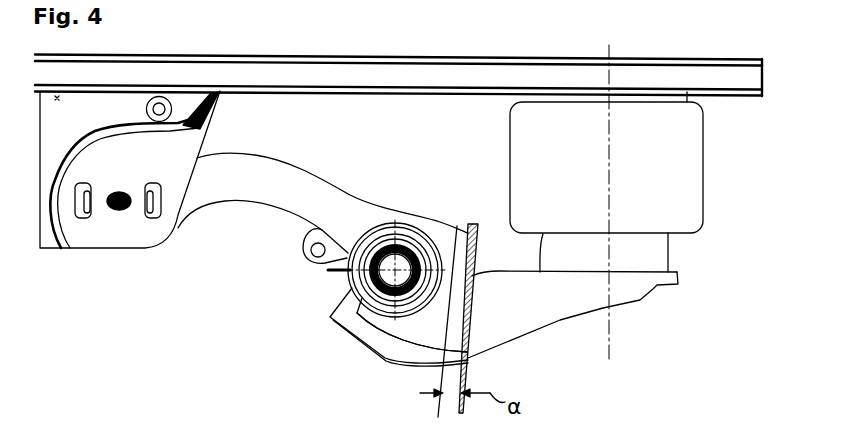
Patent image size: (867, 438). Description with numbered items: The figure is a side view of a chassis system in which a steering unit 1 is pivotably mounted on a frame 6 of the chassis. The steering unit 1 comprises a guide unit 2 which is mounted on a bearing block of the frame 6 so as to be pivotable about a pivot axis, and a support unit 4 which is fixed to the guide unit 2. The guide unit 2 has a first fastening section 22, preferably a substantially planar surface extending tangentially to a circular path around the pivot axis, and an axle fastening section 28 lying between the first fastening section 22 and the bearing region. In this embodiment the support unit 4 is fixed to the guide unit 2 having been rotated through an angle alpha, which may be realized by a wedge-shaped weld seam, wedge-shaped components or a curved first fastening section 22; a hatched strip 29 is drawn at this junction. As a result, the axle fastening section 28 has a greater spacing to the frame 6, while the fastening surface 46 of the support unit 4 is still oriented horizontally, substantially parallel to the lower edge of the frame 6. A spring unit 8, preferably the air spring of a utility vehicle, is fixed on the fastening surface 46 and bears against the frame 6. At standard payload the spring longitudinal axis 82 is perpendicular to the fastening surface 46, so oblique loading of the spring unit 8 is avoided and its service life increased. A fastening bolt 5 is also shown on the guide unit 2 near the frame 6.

The steering unit 1 is at (383, 364).
The guide unit 2 is at (250, 208).
The support unit 4 is at (574, 308).
The fastening bolt 5 is at (121, 210).
The frame 6 is at (352, 73).
The spring unit 8 is at (690, 212).
The first fastening section 22 is at (465, 232).
The axle fastening section 28 is at (360, 333).
The stop strip 29 is at (478, 254).
The fastening surface 46 is at (627, 267).
The spring longitudinal axis 82 is at (609, 337).